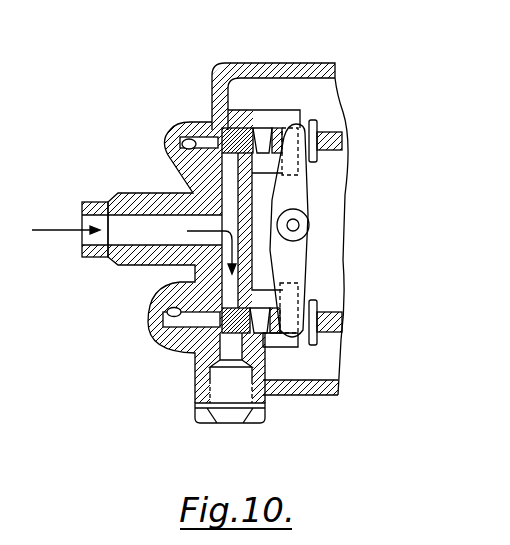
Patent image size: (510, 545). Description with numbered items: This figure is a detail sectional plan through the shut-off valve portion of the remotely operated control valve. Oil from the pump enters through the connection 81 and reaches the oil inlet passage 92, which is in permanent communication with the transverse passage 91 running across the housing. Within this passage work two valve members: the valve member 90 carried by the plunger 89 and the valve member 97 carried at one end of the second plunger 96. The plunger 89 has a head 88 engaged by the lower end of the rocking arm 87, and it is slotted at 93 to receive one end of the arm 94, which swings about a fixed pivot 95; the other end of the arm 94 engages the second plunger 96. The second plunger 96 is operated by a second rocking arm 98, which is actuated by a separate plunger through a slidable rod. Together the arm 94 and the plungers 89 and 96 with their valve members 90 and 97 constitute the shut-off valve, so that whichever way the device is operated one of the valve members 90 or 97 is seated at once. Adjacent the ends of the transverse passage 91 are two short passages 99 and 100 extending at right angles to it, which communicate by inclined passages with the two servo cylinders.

The connection 81 is at (94, 203).
The rocking arm 87 is at (340, 319).
The head 88 is at (313, 302).
The plunger 89 is at (260, 323).
The valve member 90 is at (197, 348).
The transverse passage 91 is at (222, 279).
The oil inlet passage 92 is at (138, 230).
The slot 93 is at (267, 337).
The arm 94 is at (293, 262).
The fixed pivot 95 is at (300, 218).
The second plunger 96 is at (262, 142).
The valve member 97 is at (222, 130).
The second rocking arm 98 is at (333, 133).
The short passage 99 is at (188, 320).
The short passage 100 is at (198, 141).